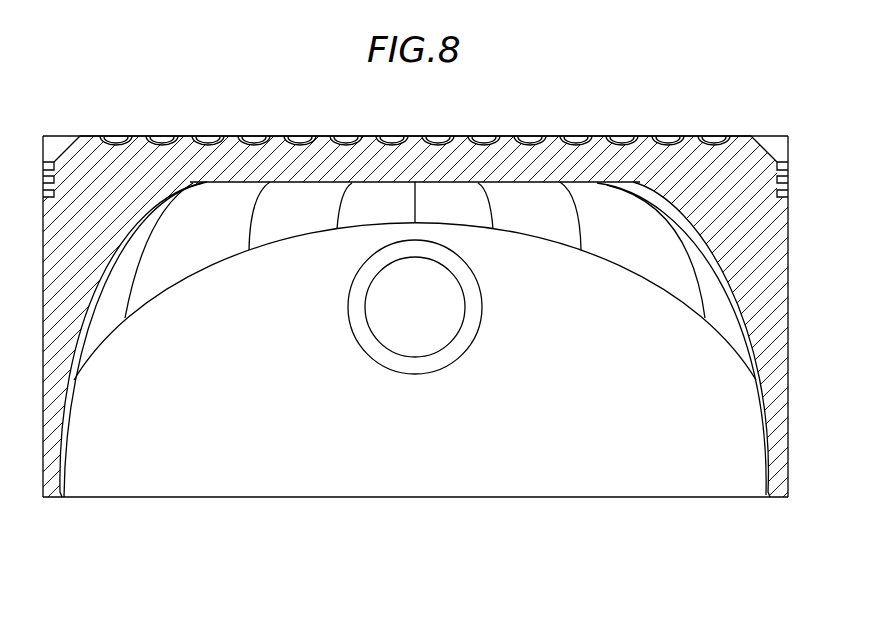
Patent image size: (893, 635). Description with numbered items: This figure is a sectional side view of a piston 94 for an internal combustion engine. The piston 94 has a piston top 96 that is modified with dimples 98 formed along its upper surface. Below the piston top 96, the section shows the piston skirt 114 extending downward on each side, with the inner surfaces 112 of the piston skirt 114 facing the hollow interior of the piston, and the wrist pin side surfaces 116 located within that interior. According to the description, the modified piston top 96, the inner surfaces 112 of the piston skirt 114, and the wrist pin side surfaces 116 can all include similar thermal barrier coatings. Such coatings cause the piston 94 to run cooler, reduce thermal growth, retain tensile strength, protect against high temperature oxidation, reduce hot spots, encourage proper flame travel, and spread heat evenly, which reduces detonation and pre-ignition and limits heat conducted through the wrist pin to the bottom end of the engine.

The piston 94 is at (32, 497).
The piston top 96 is at (552, 137).
The dimples 98 is at (667, 137).
The inner surfaces 112 is at (93, 312).
The piston skirt 114 is at (757, 392).
The wrist pin side surfaces 116 is at (450, 420).